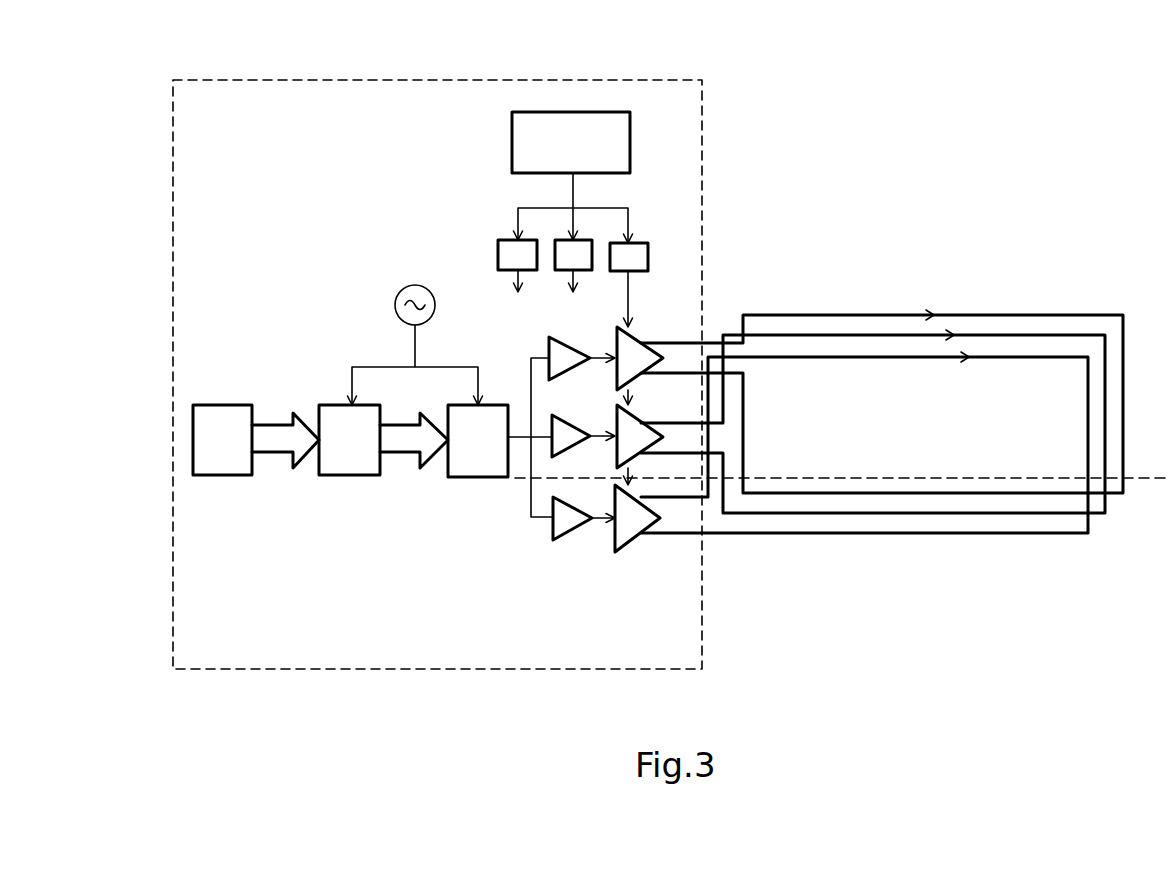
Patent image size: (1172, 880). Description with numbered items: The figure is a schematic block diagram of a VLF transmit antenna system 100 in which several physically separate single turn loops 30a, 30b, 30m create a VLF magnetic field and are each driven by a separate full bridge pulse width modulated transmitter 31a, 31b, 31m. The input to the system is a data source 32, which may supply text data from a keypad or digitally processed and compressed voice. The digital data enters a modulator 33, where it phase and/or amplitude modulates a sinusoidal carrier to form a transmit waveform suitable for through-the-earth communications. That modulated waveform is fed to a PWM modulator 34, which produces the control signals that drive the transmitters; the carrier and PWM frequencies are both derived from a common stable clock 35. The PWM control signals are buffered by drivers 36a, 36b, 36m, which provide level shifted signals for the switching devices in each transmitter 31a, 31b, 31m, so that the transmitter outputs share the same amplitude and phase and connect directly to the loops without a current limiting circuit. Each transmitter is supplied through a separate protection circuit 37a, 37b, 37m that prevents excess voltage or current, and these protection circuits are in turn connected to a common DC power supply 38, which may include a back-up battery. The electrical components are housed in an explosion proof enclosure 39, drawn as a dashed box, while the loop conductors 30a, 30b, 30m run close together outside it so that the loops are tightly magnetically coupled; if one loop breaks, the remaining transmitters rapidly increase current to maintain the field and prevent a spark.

The VLF transmit antenna system 100 is at (890, 88).
The explosion proof enclosure 39 is at (448, 80).
The common DC power supply 38 is at (510, 153).
The protection circuit 37a is at (645, 238).
The protection circuit 37b is at (582, 236).
The protection circuit 37m is at (510, 240).
The common stable clock 35 is at (400, 283).
The data source 32 is at (222, 395).
The modulator 33 is at (317, 473).
The PWM modulator 34 is at (485, 482).
The driver 36a is at (550, 338).
The driver 36b is at (557, 403).
The driver 36m is at (563, 548).
The full bridge PWM transmit amplifier 31a is at (640, 338).
The full bridge PWM transmit amplifier 31b is at (640, 418).
The full bridge PWM transmit amplifier 31m is at (622, 553).
The single turn loop 30a is at (787, 305).
The single turn loop 30b is at (862, 332).
The single turn loop 30m is at (992, 355).